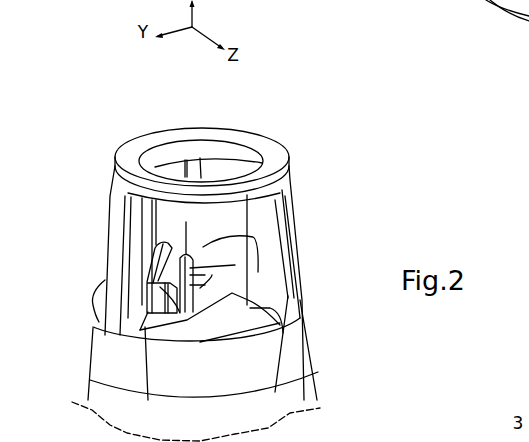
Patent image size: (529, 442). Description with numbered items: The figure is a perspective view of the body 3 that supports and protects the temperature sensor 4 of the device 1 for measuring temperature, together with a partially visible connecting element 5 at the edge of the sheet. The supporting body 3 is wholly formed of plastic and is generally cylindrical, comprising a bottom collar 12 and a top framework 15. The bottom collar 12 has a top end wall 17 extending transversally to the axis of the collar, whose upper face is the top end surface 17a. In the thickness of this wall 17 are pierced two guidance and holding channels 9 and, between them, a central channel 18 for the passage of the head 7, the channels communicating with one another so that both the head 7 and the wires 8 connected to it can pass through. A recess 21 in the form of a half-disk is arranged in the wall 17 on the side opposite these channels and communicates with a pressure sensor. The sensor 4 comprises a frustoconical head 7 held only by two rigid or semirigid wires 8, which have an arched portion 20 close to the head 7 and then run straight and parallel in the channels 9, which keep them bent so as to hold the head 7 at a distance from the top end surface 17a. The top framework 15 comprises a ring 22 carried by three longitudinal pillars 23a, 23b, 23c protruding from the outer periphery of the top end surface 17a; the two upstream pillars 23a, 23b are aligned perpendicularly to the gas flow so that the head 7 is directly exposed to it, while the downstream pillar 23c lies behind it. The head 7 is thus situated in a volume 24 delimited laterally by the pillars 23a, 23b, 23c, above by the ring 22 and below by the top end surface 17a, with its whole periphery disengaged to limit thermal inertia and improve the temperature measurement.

The device for measuring temperature 1 is at (115, 113).
The supporting body 3 is at (278, 119).
The temperature sensor 4 is at (138, 241).
The connecting element 5 is at (481, 1).
The head 7 is at (152, 220).
The wires 8 is at (153, 300).
The channels 9 is at (153, 333).
The bottom collar 12 is at (331, 367).
The top framework 15 is at (321, 248).
The top end wall 17 is at (315, 332).
The top end surface 17a is at (142, 375).
The central channel 18 is at (176, 315).
The arched portion 20 is at (137, 262).
The recess 21 is at (276, 357).
The ring 22 is at (128, 153).
The upstream longitudinal pillar 23a is at (114, 200).
The upstream longitudinal pillar 23b is at (180, 161).
The downstream longitudinal pillar 23c is at (285, 200).
The volume 24 is at (205, 242).